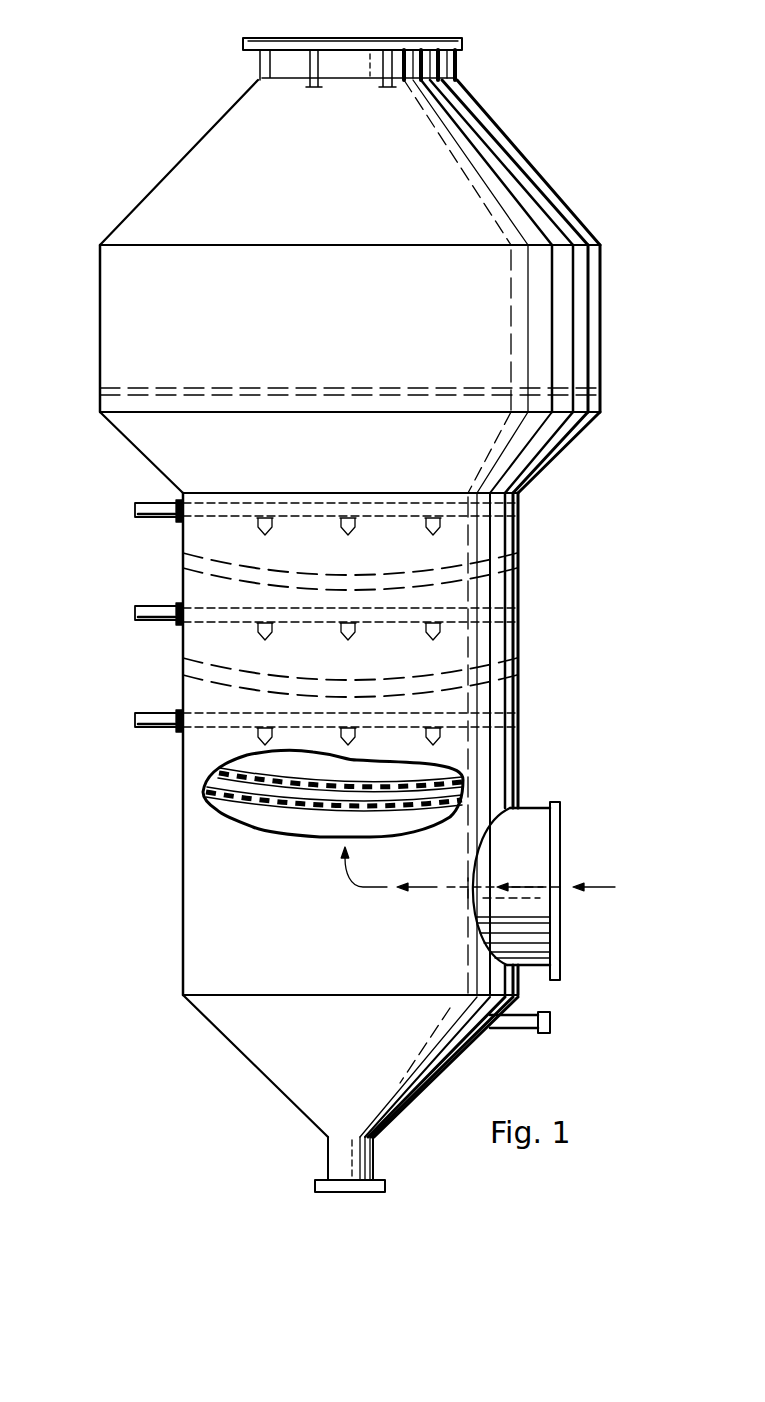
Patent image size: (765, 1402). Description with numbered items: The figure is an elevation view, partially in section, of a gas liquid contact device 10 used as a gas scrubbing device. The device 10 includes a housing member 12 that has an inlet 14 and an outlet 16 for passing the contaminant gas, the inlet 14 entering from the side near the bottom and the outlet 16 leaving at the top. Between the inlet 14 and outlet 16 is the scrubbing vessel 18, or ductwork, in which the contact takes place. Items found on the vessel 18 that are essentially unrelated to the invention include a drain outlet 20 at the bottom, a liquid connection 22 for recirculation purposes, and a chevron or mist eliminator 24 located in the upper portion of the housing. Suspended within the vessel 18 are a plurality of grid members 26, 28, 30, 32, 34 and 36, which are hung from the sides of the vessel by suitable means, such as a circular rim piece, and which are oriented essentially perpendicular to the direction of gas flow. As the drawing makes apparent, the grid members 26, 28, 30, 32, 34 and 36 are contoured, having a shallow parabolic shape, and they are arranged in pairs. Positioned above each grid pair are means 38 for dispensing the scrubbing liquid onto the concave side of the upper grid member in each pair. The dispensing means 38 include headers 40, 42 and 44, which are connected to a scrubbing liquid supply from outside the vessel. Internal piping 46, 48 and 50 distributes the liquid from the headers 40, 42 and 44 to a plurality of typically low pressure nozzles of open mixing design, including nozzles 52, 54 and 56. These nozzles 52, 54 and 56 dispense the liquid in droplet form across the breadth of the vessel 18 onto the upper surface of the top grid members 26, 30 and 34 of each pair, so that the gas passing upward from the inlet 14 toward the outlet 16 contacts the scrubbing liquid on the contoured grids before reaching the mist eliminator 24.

The device 10 is at (650, 562).
The housing member 12 is at (558, 467).
The inlet 14 is at (560, 817).
The outlet 16 is at (463, 35).
The scrubbing vessel 18 is at (182, 835).
The drain outlet 20 is at (377, 1153).
The liquid connection 22 is at (555, 1013).
The mist eliminator 24 is at (358, 387).
The grid member 26 is at (390, 570).
The grid member 28 is at (267, 587).
The grid member 30 is at (383, 677).
The grid member 32 is at (320, 693).
The grid member 34 is at (295, 783).
The grid member 36 is at (320, 805).
The dispensing means 38 is at (131, 510).
The header 40 is at (143, 505).
The header 42 is at (145, 610).
The header 44 is at (145, 715).
The internal piping 46 is at (238, 507).
The internal piping 48 is at (213, 616).
The internal piping 50 is at (207, 723).
The nozzle 52 is at (345, 528).
The nozzle 54 is at (347, 640).
The nozzle 56 is at (362, 738).